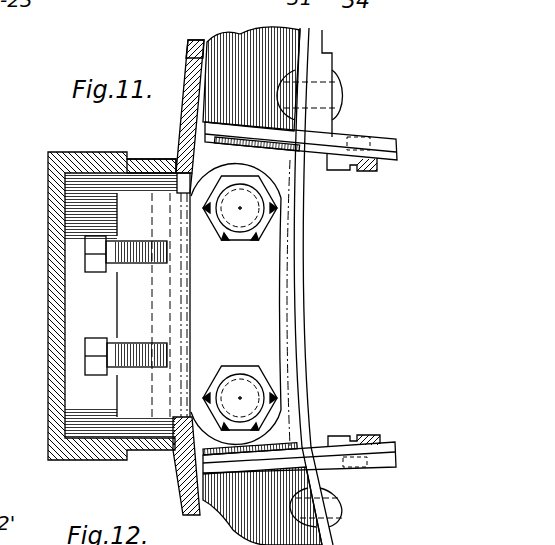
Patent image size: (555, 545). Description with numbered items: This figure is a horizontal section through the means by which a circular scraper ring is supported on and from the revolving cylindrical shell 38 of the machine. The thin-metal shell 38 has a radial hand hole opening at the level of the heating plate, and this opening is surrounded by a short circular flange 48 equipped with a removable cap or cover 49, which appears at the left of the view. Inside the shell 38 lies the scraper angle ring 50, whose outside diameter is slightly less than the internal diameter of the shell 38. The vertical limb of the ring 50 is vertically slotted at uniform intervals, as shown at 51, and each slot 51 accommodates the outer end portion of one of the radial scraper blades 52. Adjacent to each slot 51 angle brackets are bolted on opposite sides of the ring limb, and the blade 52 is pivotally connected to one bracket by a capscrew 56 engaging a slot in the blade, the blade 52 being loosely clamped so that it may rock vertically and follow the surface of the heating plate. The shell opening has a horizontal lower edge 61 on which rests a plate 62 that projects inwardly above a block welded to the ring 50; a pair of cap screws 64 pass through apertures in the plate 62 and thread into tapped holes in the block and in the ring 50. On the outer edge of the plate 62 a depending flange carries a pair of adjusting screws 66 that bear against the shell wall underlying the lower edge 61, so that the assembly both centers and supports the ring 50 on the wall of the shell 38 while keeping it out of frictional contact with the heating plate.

The cylindrical shell 38 is at (188, 52).
The circular flange 48 is at (145, 164).
The removable cap or cover 49 is at (55, 226).
The angle ring 50 is at (248, 53).
The slots 51 is at (310, 165).
The radial scraper blades 52 is at (388, 163).
The capscrew 56 is at (343, 173).
The horizontal lower edge 61 is at (175, 147).
The plate 62 is at (258, 303).
The cap screws 64 is at (241, 222).
The adjusting screws 66 is at (95, 248).